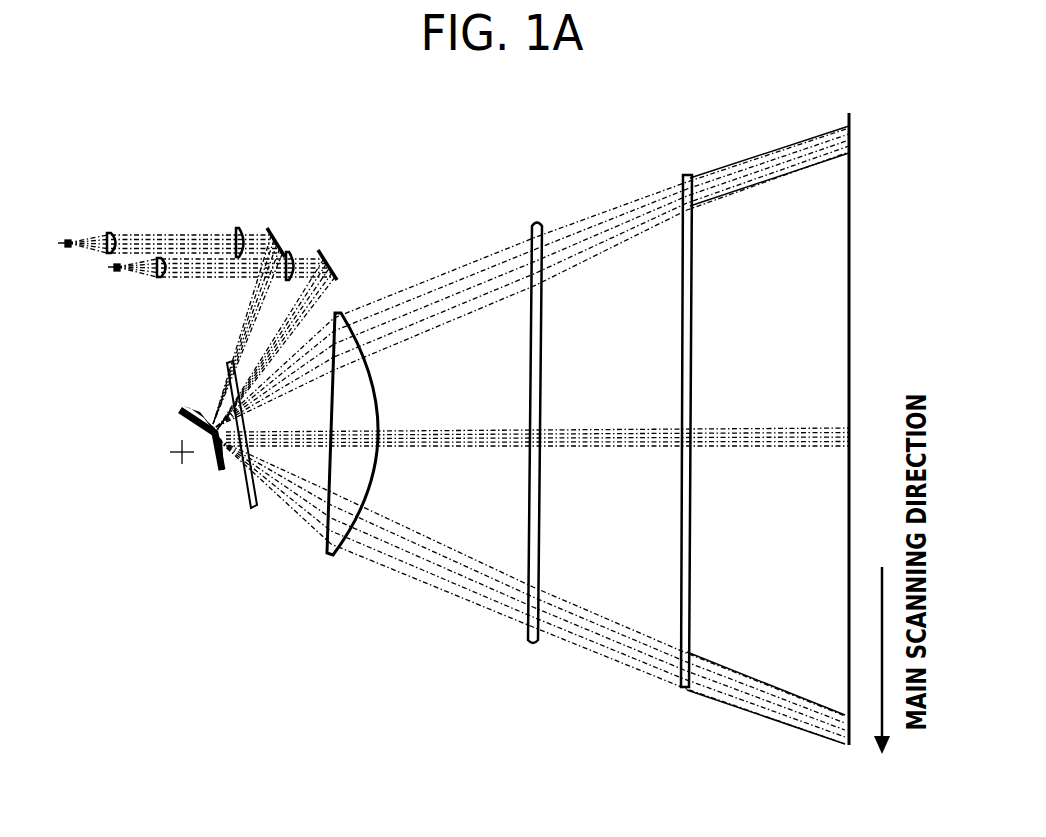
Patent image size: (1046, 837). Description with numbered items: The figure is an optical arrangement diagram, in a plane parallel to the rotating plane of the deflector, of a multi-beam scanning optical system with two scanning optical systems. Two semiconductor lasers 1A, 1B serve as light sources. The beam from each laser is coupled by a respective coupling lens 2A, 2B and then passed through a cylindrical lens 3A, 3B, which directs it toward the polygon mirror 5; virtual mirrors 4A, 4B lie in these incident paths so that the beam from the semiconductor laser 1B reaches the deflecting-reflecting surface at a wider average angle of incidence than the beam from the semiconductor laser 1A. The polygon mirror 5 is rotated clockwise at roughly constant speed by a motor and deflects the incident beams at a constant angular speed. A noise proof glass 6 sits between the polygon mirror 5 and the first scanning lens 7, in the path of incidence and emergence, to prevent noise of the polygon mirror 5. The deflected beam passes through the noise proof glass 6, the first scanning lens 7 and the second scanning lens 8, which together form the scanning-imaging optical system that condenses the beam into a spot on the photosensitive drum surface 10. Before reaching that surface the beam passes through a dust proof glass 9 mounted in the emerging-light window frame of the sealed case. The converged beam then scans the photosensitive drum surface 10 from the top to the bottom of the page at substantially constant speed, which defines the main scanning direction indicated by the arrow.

The semiconductor laser 1A is at (114, 281).
The semiconductor laser 1B is at (72, 232).
The coupling lens 2A is at (152, 284).
The coupling lens 2B is at (113, 229).
The cylindrical lens 3A is at (297, 250).
The cylindrical lens 3B is at (244, 231).
The virtual mirror 4A is at (330, 248).
The virtual mirror 4B is at (281, 220).
The polygon mirror 5 is at (180, 406).
The noise proof glass 6 is at (243, 500).
The first scanning lens 7 is at (343, 312).
The second scanning lens 8 is at (540, 218).
The dust proof glass 9 is at (692, 168).
The photosensitive drum surface 10 is at (858, 182).